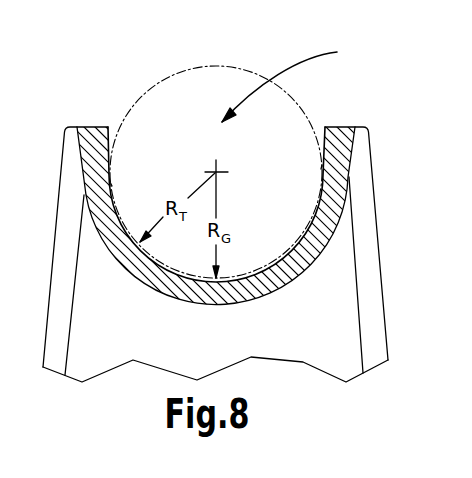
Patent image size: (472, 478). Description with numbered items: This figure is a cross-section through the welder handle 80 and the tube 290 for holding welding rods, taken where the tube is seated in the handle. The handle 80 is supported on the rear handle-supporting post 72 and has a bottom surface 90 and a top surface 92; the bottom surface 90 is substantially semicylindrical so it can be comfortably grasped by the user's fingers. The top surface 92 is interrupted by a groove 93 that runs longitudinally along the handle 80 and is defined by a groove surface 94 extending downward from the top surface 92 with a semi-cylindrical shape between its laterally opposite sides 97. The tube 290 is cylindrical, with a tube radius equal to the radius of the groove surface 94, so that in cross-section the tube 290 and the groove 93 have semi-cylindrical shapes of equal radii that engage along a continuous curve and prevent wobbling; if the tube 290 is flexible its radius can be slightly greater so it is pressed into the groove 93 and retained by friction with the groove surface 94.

The rear handle-supporting post 72 is at (192, 352).
The handle 80 is at (88, 126).
The top surface 92 is at (344, 127).
The bottom surface 90 is at (246, 302).
The groove surface 94 is at (303, 233).
The laterally opposite sides 97 is at (110, 182).
The tube 290 is at (238, 65).
The groove 93 is at (293, 81).